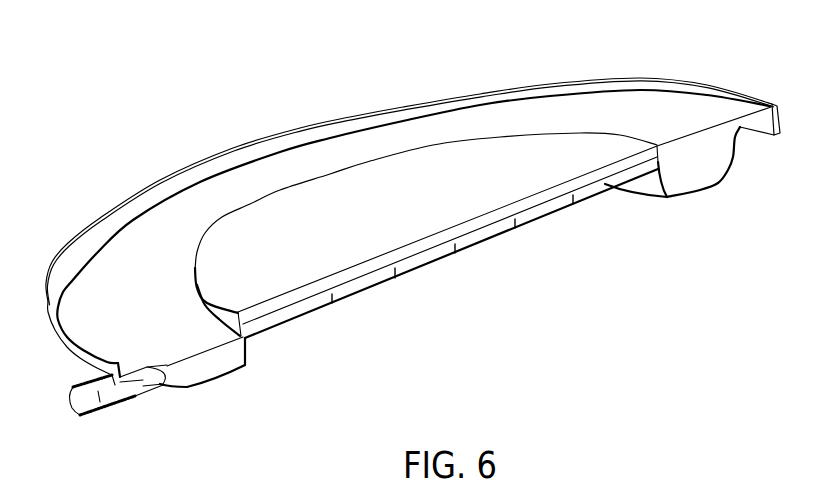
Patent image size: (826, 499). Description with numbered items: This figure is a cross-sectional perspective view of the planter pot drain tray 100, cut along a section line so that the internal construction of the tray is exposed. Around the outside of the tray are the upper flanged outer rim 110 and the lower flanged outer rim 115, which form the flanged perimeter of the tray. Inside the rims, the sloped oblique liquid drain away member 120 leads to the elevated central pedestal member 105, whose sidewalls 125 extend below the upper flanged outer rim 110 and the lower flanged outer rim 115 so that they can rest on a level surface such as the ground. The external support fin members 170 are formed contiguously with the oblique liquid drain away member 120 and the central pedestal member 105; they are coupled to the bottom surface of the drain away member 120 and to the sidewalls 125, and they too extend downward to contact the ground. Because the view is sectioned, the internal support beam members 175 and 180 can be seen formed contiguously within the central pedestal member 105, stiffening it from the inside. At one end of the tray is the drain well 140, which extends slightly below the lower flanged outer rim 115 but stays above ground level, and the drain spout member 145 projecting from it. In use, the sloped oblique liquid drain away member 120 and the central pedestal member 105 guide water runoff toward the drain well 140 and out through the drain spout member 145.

The planter pot drain tray 100 is at (190, 94).
The central pedestal member 105 is at (377, 217).
The upper flanged outer rim 110 is at (747, 90).
The lower flanged outer rim 115 is at (75, 372).
The oblique liquid drain away member 120 is at (657, 120).
The sidewalls 125 is at (213, 313).
The drain well 140 is at (143, 383).
The drain spout member 145 is at (100, 410).
The support fin members 170 is at (710, 158).
The internal support beam member 175 is at (598, 190).
The internal support beam member 180 is at (453, 252).